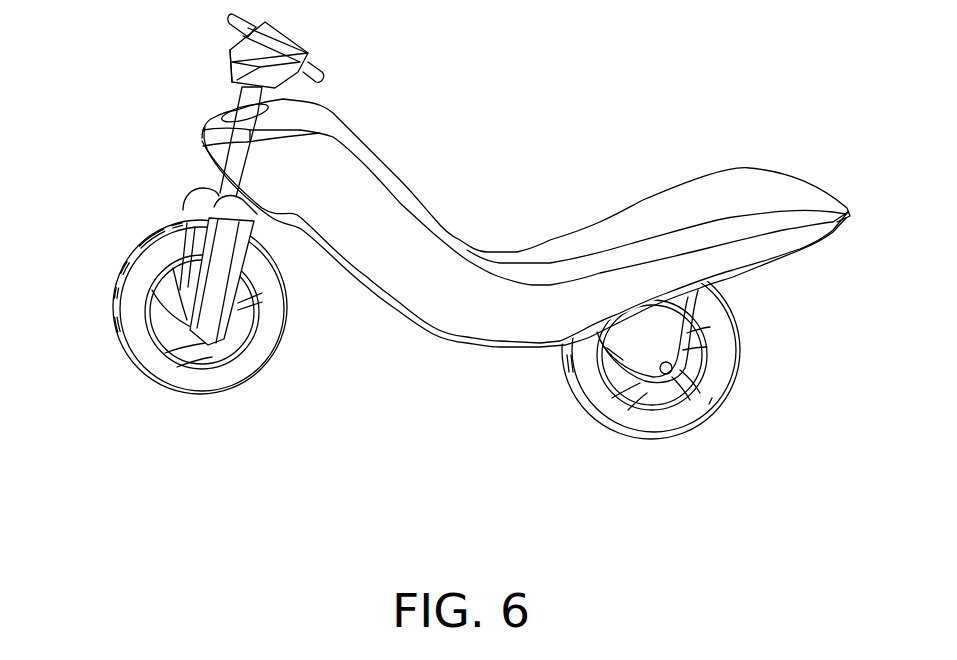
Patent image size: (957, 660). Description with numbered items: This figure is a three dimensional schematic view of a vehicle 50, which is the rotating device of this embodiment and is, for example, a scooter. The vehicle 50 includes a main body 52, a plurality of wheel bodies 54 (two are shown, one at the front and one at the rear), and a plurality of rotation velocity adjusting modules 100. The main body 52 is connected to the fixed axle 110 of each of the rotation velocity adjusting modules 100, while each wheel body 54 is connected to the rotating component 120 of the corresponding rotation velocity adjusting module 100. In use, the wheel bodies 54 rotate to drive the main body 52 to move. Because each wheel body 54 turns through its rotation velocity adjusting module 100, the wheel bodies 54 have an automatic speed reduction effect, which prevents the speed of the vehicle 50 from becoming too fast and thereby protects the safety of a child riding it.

The vehicle 50 is at (884, 524).
The main body 52 is at (651, 334).
The wheel body 54 is at (130, 267).
The rotation velocity adjusting module 100 is at (138, 303).
The fixed axle 110 is at (668, 374).
The rotating component 120 is at (153, 357).